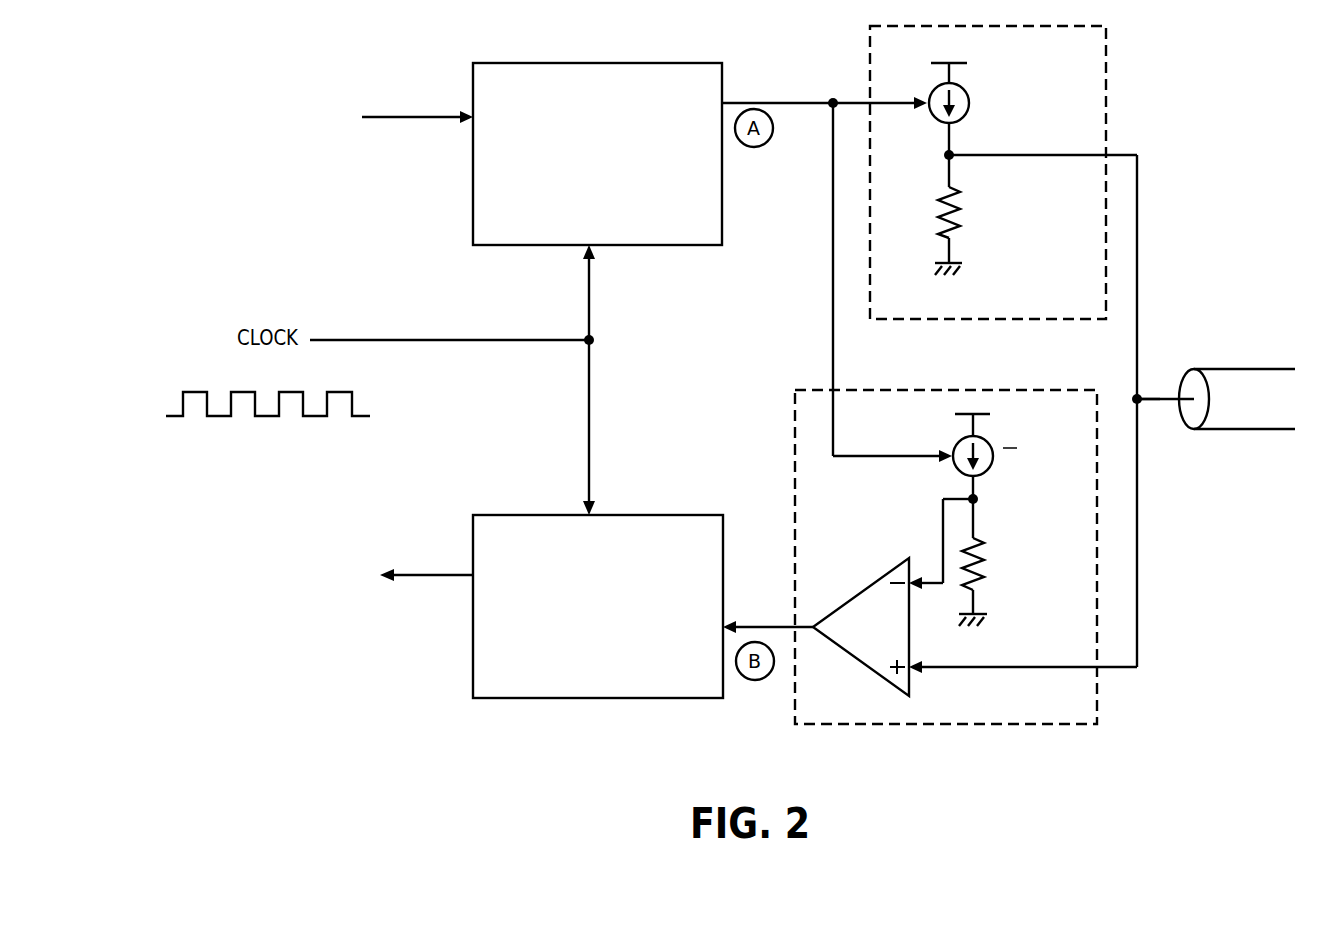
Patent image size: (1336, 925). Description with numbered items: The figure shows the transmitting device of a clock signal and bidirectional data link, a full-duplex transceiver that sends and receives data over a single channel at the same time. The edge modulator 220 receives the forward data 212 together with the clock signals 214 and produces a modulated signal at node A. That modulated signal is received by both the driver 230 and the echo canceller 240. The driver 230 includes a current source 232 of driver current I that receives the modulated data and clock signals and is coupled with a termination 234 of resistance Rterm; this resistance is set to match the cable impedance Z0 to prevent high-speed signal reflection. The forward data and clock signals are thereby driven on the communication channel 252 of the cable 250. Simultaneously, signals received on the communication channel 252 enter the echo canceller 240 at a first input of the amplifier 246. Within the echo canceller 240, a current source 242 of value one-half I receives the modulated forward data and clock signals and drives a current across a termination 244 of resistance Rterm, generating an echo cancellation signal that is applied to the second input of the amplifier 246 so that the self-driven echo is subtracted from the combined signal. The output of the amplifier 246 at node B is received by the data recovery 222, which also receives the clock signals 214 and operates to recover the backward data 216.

The forward data 212 is at (293, 179).
The clock signals 214 is at (293, 464).
The backward data 216 is at (297, 631).
The edge modulator 220 is at (615, 193).
The data recovery 222 is at (612, 634).
The driver 230 is at (950, 306).
The current source 232 is at (1053, 121).
The termination 234 is at (1057, 247).
The echo canceller 240 is at (1085, 711).
The current source 242 is at (1057, 499).
The termination 244 is at (1057, 597).
The amplifier 246 is at (898, 639).
The cable 250 is at (1262, 407).
The communication channel 252 is at (1157, 401).